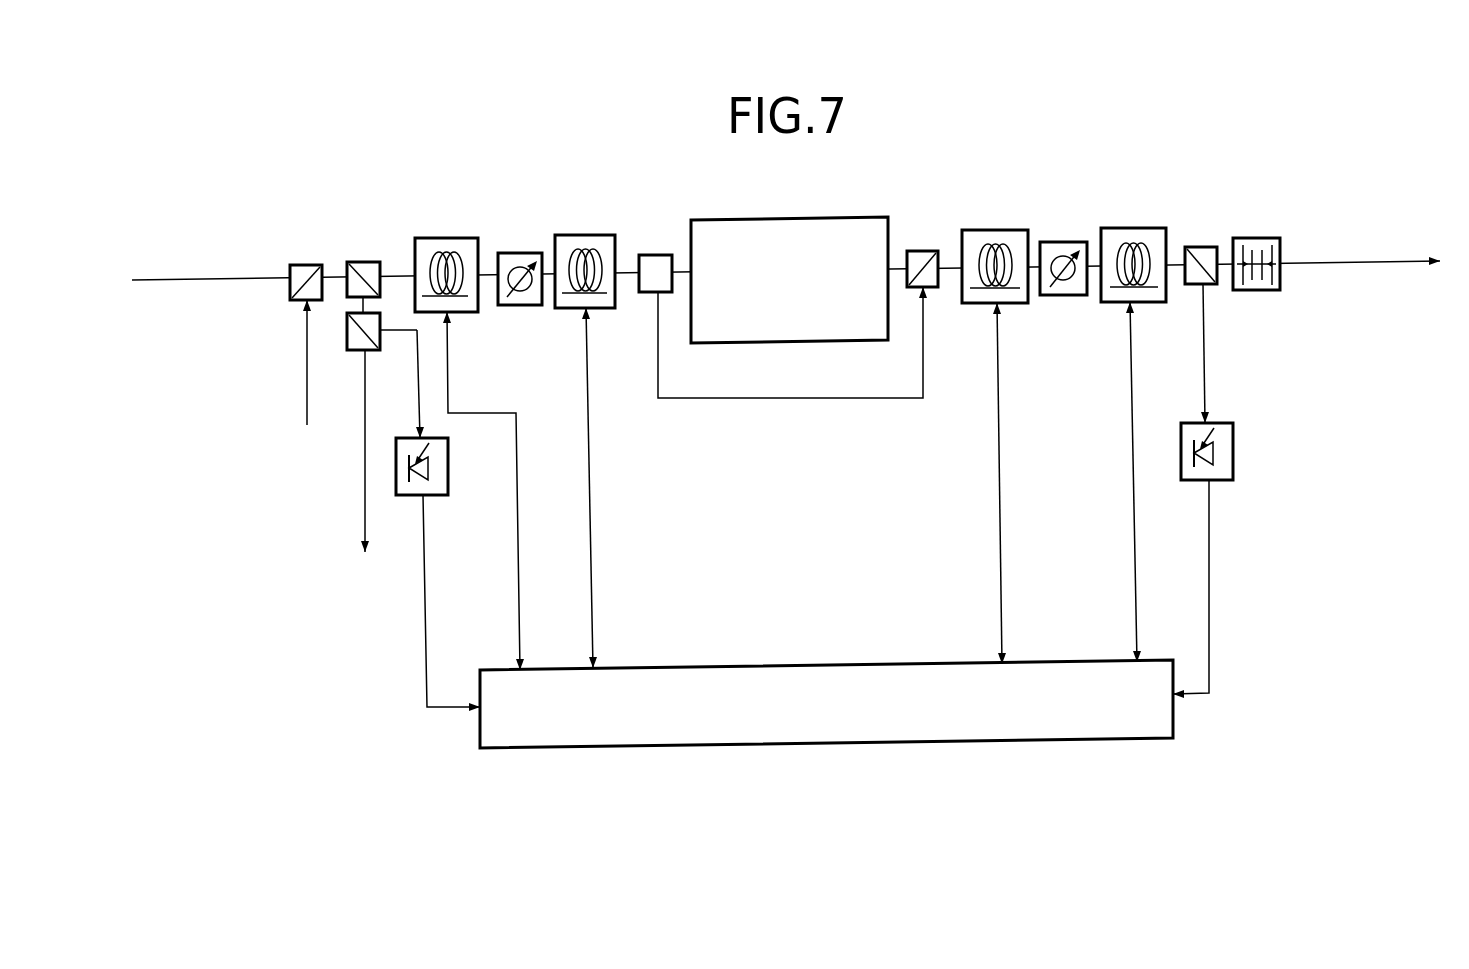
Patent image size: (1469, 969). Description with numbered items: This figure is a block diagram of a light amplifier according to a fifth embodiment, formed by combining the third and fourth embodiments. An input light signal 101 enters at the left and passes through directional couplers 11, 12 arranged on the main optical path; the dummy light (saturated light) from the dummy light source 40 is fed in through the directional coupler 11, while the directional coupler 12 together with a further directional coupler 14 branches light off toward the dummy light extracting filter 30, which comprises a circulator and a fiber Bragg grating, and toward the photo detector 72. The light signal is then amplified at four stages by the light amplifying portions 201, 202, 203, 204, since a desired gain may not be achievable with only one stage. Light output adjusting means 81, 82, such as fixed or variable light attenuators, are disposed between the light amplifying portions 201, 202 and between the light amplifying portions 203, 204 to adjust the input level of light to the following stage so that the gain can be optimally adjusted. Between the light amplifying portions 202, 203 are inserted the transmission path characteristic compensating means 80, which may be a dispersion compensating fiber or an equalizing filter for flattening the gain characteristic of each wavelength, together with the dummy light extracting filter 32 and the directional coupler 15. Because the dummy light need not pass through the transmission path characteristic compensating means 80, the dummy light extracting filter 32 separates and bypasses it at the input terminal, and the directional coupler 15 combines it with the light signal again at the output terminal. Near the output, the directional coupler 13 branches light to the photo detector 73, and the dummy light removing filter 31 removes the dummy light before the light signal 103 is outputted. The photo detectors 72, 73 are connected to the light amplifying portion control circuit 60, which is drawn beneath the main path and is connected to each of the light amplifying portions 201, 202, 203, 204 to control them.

The directional coupler 11 is at (300, 264).
The directional coupler 12 is at (366, 261).
The directional coupler 13 is at (1198, 247).
The directional coupler 14 is at (347, 333).
The directional coupler 15 is at (915, 251).
The light amplifying portion 201 is at (447, 238).
The light amplifying portion 202 is at (578, 235).
The light amplifying portion 203 is at (995, 230).
The light amplifying portion 204 is at (1128, 228).
The light output adjusting means 81 is at (510, 253).
The light output adjusting means 82 is at (1060, 242).
The dummy light extracting filter 32 is at (655, 255).
The transmission path characteristic compensating means 80 is at (808, 219).
The dummy light removing filter 31 is at (1250, 238).
The photo detector 72 is at (448, 468).
The photo detector 73 is at (1233, 470).
The light amplifying portion control circuit 60 is at (931, 660).
The light signal 101 is at (781, 282).
The light signal 103 is at (1371, 283).
The dummy light source 40 is at (276, 388).
The dummy light extracting filter 30 is at (333, 490).